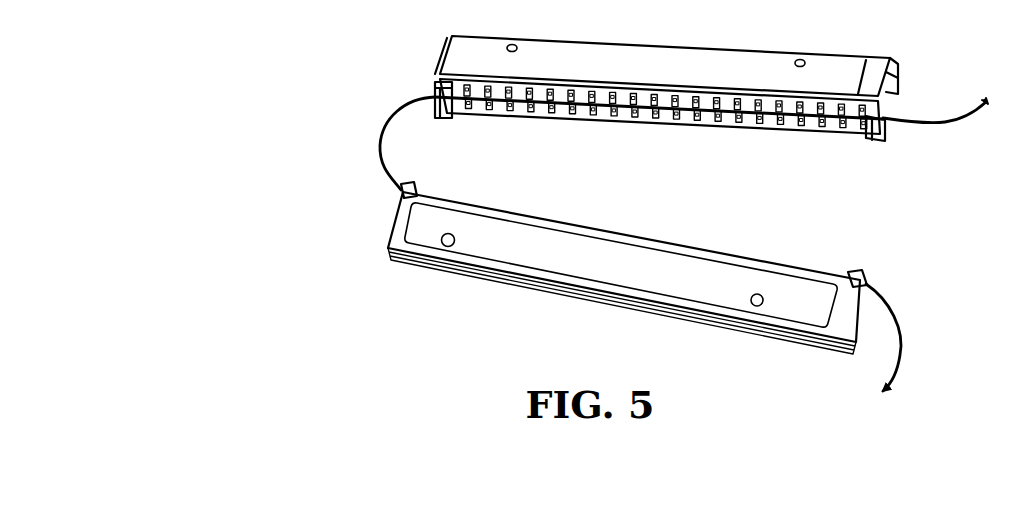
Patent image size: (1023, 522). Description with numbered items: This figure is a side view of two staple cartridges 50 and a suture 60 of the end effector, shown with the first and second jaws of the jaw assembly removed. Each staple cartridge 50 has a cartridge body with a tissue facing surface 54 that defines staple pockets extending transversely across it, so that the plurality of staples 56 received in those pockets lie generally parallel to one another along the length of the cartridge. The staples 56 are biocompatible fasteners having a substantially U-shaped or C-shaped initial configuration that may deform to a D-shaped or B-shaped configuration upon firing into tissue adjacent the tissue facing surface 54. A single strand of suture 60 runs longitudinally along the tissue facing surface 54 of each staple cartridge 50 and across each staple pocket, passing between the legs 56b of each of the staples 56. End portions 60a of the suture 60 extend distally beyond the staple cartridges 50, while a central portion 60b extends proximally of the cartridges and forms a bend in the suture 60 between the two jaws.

The staple cartridge 50 is at (612, 57).
The tissue facing surface 54 is at (812, 122).
The staples 56 is at (800, 108).
The legs 56b is at (763, 110).
The suture 60 is at (402, 89).
The end portions 60a is at (942, 123).
The central portion 60b is at (378, 147).